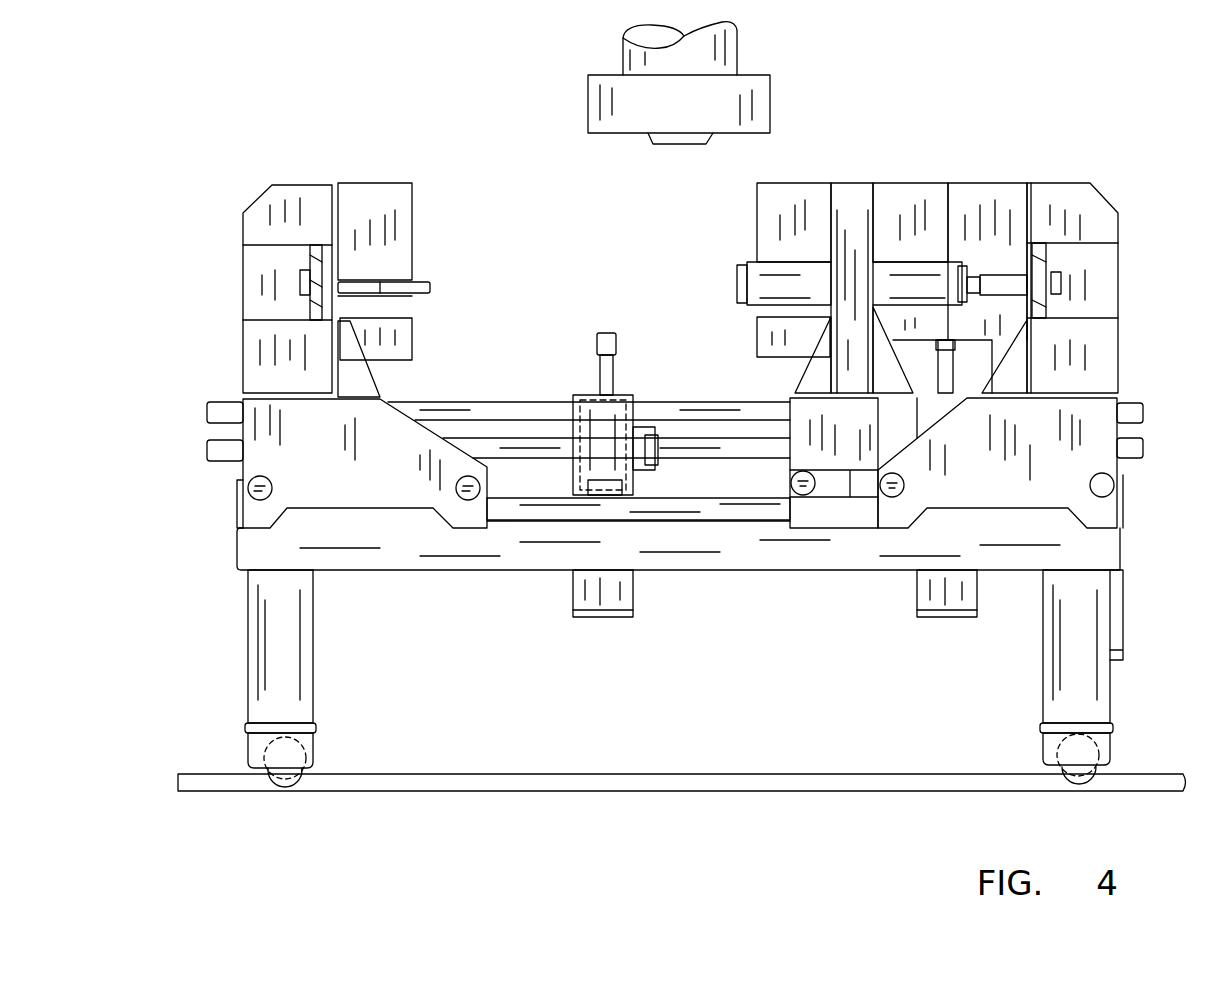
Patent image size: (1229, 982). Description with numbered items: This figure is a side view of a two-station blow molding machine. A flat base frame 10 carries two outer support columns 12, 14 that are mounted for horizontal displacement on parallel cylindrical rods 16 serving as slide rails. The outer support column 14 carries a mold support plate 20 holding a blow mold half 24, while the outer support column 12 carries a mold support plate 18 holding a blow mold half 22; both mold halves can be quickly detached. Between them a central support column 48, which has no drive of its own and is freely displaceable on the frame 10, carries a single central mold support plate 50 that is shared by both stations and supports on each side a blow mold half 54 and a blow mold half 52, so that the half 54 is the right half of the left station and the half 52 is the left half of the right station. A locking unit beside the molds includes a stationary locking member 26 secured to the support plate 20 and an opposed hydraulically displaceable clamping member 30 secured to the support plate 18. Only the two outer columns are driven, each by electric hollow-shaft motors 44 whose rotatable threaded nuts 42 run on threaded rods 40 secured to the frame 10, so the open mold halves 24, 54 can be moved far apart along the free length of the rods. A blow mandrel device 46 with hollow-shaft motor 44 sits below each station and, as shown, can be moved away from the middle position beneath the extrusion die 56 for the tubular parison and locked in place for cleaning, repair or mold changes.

The base frame 10 is at (1075, 535).
The support column 12 is at (1055, 442).
The support column 14 is at (292, 422).
The cylindrical rods 16 is at (692, 503).
The mold support plate 18 is at (1040, 268).
The mold support plate 20 is at (323, 272).
The blow mold half 22 is at (983, 210).
The blow mold half 24 is at (390, 215).
The stationary locking member 26 is at (430, 292).
The hydraulically displaceable clamping member 30 is at (765, 290).
The threaded rods 40 is at (510, 448).
The threaded nut 42 is at (645, 450).
The hollow-shaft motor 44 is at (600, 440).
The blow mandrel device 46 is at (607, 597).
The central support column 48 is at (843, 438).
The central mold support plate 50 is at (856, 232).
The blow mold half 52 is at (893, 210).
The blow mold half 54 is at (775, 218).
The extrusion die 56 is at (668, 146).